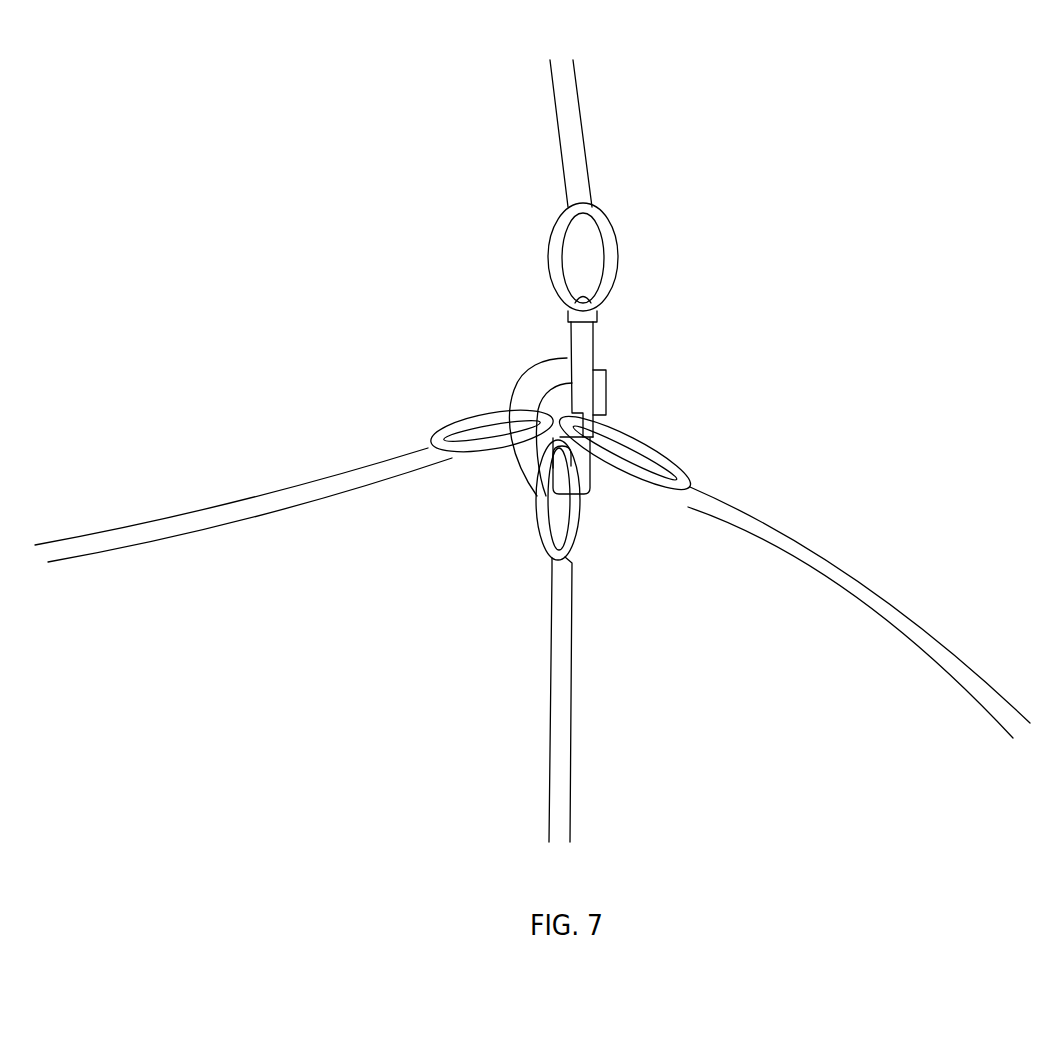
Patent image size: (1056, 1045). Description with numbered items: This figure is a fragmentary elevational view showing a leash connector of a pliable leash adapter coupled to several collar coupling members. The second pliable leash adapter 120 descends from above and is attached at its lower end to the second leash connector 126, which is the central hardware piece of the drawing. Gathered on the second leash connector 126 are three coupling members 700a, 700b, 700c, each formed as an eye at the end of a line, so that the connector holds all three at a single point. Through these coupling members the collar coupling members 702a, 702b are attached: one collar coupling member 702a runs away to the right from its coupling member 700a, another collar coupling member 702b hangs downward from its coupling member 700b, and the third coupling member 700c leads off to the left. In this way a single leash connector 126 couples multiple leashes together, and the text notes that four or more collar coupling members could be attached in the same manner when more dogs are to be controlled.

The second pliable leash adapter 120 is at (575, 138).
The second leash connector 126 is at (585, 368).
The coupling member 700a is at (657, 458).
The coupling member 700b is at (543, 530).
The coupling member 700c is at (465, 423).
The collar coupling member 702a is at (903, 613).
The collar coupling member 702b is at (567, 745).